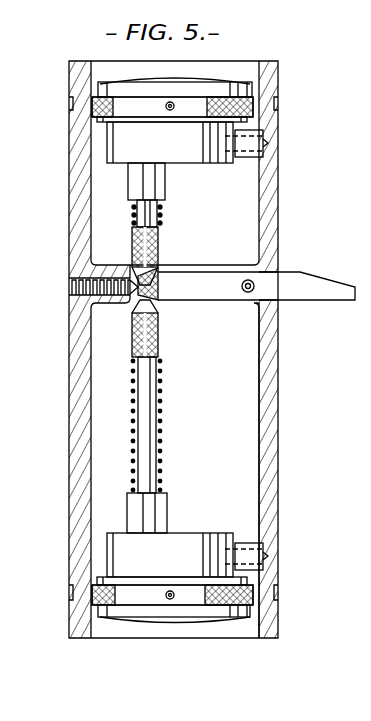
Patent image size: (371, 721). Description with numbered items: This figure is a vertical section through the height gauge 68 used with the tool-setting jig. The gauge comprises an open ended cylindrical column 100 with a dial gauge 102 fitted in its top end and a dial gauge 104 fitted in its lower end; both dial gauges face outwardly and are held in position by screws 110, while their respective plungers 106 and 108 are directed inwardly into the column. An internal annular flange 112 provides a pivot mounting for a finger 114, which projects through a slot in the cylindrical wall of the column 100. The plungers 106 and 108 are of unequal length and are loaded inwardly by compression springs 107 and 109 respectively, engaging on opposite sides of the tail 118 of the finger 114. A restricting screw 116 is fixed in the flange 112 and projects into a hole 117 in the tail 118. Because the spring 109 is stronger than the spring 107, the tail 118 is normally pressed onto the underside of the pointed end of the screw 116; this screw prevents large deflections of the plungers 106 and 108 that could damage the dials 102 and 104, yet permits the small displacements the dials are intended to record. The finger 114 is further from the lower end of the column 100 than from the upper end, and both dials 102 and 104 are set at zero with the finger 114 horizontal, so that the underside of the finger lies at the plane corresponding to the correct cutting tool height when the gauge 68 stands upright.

The height gauge 68 is at (283, 201).
The cylindrical column 100 is at (79, 178).
The dial gauge 102 is at (215, 92).
The dial gauge 104 is at (112, 615).
The plunger 106 is at (160, 246).
The compression spring 107 is at (162, 217).
The plunger 108 is at (158, 383).
The compression spring 109 is at (160, 453).
The screws 110 is at (273, 141).
The internal annular flange 112 is at (245, 301).
The finger 114 is at (296, 279).
The restricting screw 116 is at (70, 311).
The hole 117 is at (140, 279).
The tail 118 is at (188, 297).